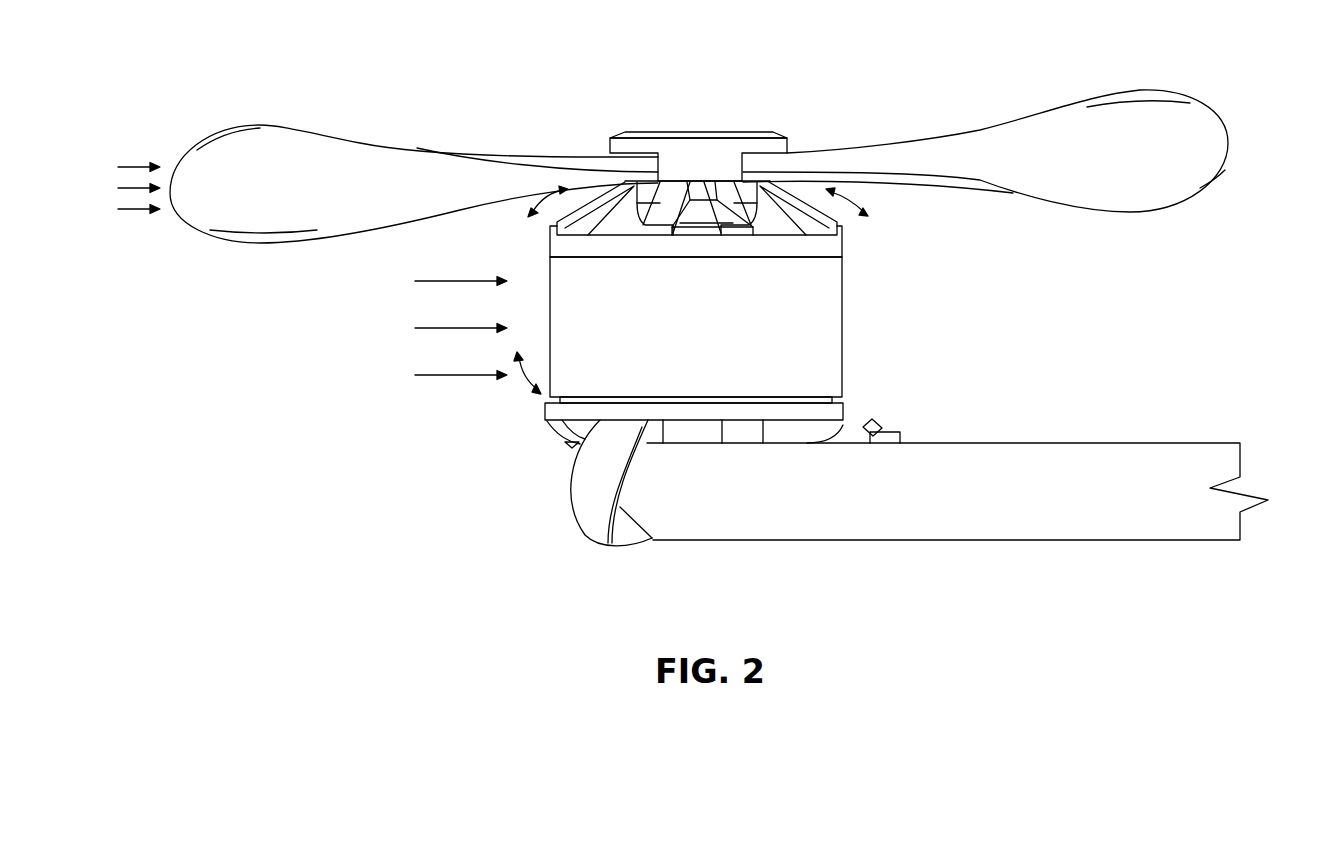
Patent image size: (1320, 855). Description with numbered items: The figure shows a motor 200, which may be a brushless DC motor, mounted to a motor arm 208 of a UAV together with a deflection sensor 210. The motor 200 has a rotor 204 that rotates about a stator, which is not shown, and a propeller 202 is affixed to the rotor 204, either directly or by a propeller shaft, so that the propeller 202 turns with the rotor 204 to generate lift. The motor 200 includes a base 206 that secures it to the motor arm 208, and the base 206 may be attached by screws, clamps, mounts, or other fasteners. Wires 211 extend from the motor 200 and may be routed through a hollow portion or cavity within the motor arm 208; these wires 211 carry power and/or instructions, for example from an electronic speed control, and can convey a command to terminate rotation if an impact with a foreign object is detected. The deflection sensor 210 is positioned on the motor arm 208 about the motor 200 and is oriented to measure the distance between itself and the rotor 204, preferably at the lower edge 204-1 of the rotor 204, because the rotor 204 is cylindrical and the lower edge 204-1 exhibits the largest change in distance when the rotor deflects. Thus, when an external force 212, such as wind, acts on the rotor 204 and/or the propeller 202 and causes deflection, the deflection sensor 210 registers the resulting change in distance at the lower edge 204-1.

The motor 200 is at (860, 236).
The propeller 202 is at (312, 157).
The rotor 204 is at (820, 305).
The lower edge 204-1 is at (845, 397).
The base 206 is at (545, 413).
The motor arm 208 is at (1023, 505).
The deflection sensor 210 is at (895, 433).
The wires 211 is at (595, 507).
The external force 212 is at (140, 212).